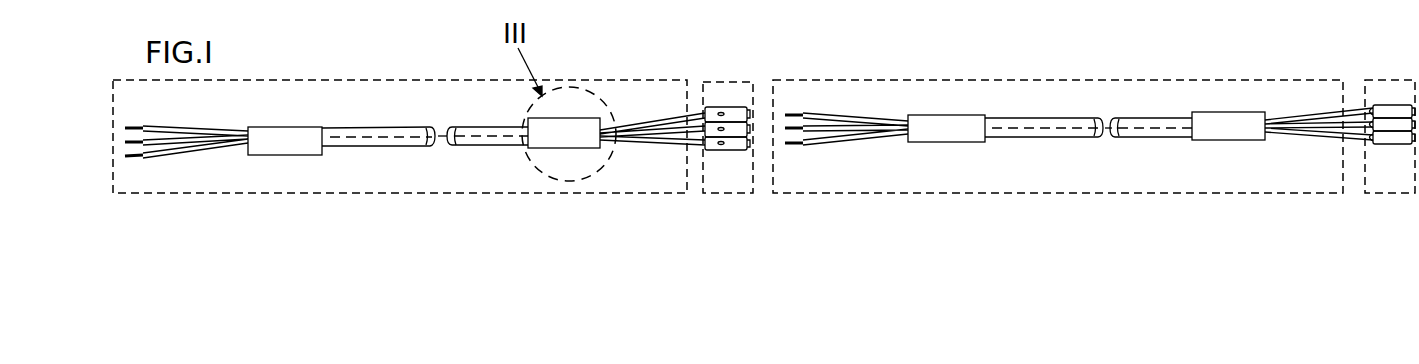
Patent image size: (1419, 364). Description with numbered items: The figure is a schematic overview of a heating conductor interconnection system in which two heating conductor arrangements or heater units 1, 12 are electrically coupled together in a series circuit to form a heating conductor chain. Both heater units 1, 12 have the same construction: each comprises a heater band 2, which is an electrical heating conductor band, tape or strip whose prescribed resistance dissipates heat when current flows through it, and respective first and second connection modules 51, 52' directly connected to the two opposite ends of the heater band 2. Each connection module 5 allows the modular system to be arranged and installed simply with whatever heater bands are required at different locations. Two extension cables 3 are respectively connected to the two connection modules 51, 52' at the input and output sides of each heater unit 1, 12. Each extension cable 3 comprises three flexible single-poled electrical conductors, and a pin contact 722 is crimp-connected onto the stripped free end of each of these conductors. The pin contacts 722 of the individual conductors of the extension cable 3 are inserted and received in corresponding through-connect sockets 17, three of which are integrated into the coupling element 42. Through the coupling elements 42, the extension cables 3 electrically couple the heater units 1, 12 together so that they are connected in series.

The heating conductor arrangement 1 is at (335, 80).
The heating conductor arrangement 12 is at (1130, 193).
The heater band 2 is at (395, 130).
The extension cable 3 is at (248, 107).
The connection module 5 is at (332, 160).
The first connection module 51 is at (278, 137).
The second connection module 52' is at (896, 136).
The pin contact 722 is at (127, 130).
The coupling element 42 is at (737, 193).
The through-connect socket 17 is at (739, 108).